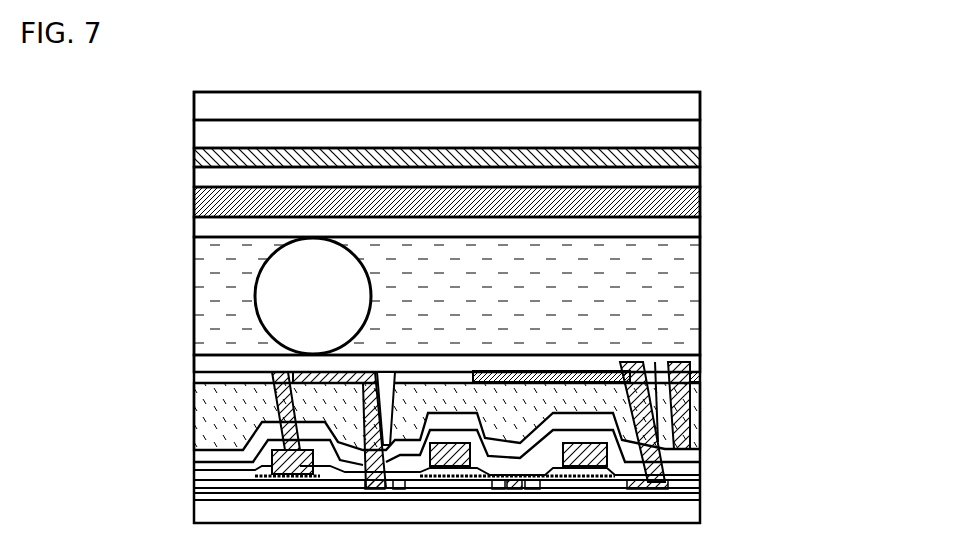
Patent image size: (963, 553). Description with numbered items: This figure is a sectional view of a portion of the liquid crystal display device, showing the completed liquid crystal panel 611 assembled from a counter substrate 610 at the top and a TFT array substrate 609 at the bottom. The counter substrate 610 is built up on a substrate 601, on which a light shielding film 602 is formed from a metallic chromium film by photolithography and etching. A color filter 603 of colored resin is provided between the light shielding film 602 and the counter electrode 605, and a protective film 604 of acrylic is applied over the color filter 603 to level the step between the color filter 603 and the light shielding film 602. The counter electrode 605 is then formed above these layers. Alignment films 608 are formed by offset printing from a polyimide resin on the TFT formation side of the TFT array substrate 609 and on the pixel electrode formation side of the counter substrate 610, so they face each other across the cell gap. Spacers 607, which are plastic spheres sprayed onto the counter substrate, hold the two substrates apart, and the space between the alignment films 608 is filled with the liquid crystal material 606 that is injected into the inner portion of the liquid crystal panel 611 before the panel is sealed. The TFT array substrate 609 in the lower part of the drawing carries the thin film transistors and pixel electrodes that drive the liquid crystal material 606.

The substrate 601 is at (208, 110).
The light shielding film 602 is at (205, 133).
The color filter 603 is at (203, 158).
The protective film 604 is at (210, 183).
The counter electrode 605 is at (212, 210).
The liquid crystal material 606 is at (210, 285).
The spacer 607 is at (348, 307).
The alignment film 608 is at (678, 223).
The TFT array substrate 609 is at (723, 373).
The counter substrate 610 is at (717, 120).
The liquid crystal panel 611 is at (850, 77).